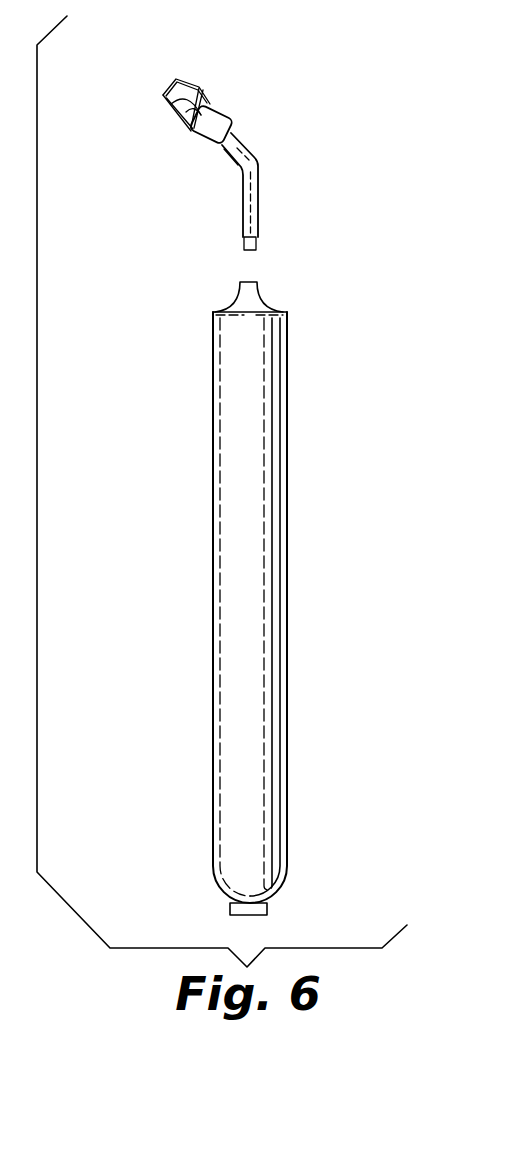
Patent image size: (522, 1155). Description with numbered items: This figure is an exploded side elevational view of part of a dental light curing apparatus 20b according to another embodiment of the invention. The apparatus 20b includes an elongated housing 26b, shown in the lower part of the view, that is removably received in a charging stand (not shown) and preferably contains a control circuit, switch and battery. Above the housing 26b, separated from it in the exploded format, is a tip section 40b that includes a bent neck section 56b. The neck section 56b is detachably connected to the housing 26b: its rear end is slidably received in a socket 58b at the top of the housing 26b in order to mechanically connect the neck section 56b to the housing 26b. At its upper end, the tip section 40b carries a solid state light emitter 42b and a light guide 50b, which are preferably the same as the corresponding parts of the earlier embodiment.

The apparatus 20b is at (302, 67).
The light guide 50b is at (187, 76).
The solid state light emitter 42b is at (170, 107).
The tip section 40b is at (255, 152).
The neck section 56b is at (252, 207).
The socket 58b is at (247, 279).
The housing 26b is at (273, 384).